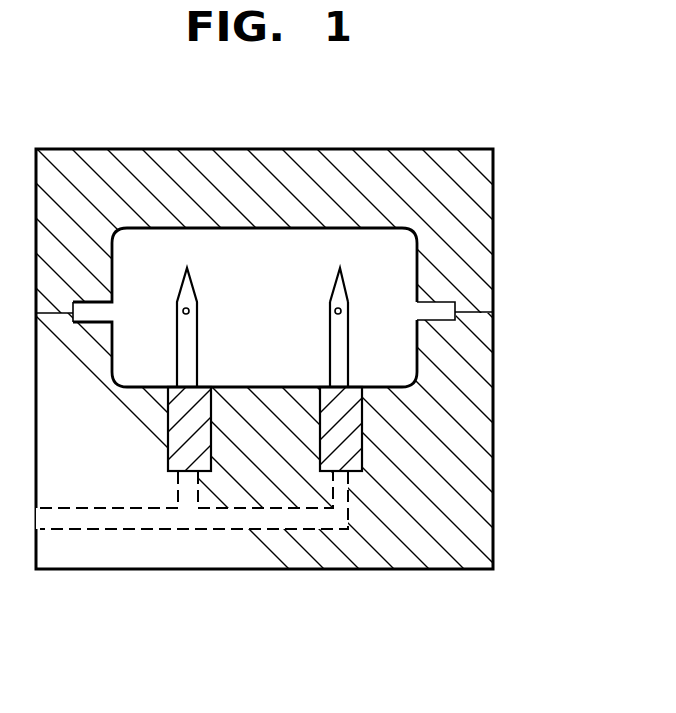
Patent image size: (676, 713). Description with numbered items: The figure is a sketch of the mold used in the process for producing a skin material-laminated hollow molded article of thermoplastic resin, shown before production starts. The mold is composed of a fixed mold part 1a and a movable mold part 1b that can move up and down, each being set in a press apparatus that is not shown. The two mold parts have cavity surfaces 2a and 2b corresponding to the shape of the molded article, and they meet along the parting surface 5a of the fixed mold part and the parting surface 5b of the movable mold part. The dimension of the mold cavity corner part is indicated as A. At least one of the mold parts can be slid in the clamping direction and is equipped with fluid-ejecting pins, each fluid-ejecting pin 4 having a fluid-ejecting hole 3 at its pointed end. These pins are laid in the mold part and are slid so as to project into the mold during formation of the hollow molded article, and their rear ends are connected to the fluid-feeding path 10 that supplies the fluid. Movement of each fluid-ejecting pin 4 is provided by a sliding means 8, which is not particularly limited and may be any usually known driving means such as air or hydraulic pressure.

The fixed mold part 1a is at (480, 537).
The movable mold part 1b is at (458, 173).
The cavity surface of the fixed mold part 2a is at (420, 378).
The cavity surface of the movable mold part 2b is at (420, 252).
The fluid-ejecting hole 3 is at (330, 302).
The fluid-ejecting pin 4 is at (337, 350).
The parting surface of the fixed mold part 5a is at (450, 320).
The parting surface of the movable mold part 5b is at (440, 297).
The fluid-ejecting pin-sliding means 8 is at (350, 447).
The fluid-feeding path 10 is at (152, 520).
The dimension of mold cavity corner part A is at (117, 240).